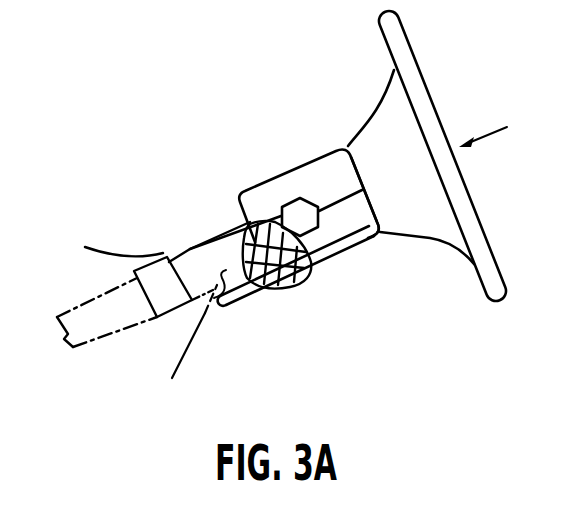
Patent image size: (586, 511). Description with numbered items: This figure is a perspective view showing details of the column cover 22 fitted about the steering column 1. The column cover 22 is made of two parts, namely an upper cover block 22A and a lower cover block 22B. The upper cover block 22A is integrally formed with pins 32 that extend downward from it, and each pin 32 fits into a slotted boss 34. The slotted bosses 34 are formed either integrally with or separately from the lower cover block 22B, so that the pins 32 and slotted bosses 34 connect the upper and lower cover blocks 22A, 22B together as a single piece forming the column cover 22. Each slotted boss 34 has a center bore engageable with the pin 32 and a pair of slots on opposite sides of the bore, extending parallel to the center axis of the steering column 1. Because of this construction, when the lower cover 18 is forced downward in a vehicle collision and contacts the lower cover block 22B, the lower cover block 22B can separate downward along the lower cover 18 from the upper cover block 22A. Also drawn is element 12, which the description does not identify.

The steering column 1 is at (148, 345).
The cable 12 is at (124, 252).
The lower cover 18 is at (186, 362).
The column cover 22 is at (275, 173).
The upper cover block 22A is at (325, 167).
The lower cover block 22B is at (352, 236).
The pin 32 is at (233, 236).
The slotted boss 34 is at (327, 270).